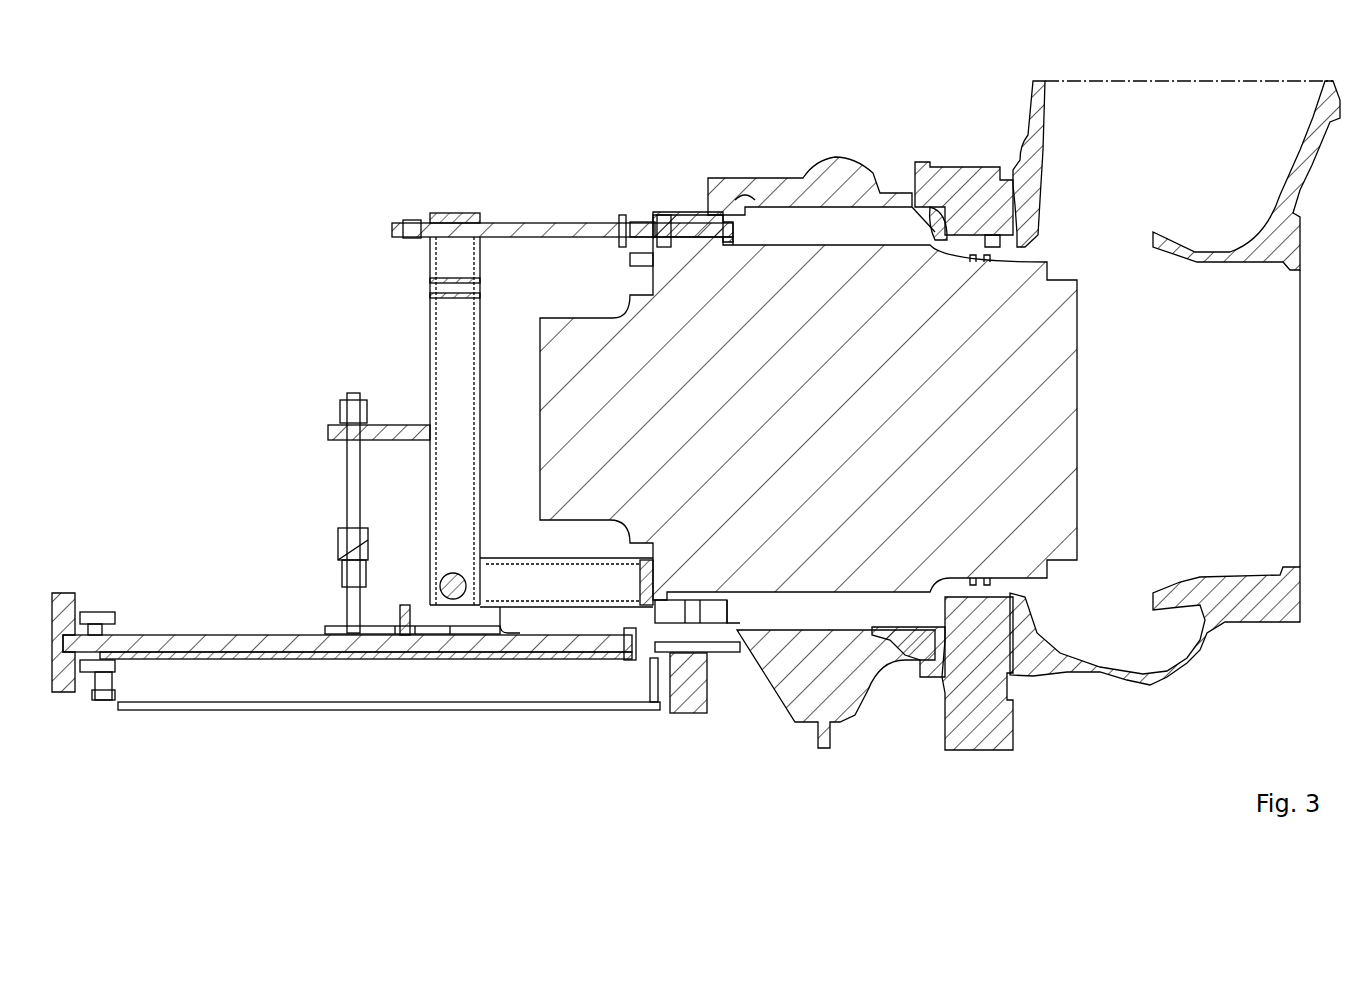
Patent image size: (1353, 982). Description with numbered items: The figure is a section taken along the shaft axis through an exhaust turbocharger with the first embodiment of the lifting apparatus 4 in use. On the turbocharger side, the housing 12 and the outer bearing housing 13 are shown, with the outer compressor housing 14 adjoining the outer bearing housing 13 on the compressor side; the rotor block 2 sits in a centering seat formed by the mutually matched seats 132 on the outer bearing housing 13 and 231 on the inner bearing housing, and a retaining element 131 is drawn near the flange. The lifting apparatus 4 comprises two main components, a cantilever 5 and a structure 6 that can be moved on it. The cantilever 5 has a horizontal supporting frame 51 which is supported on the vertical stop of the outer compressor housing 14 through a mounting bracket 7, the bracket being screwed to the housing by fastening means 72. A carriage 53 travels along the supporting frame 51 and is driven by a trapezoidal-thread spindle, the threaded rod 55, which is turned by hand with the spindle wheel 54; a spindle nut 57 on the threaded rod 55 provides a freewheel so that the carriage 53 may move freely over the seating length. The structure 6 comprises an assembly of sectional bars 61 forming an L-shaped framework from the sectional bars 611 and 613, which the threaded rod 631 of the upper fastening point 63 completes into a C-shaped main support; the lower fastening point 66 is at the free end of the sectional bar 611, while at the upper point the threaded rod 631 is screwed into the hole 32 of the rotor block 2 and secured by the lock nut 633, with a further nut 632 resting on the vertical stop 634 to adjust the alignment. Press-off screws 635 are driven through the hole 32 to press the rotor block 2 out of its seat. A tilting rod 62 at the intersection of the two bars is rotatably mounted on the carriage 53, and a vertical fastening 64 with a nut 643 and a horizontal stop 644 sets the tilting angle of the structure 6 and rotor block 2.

The rotor block 2 is at (897, 436).
The lifting apparatus 4 is at (121, 383).
The cantilever 5 is at (169, 765).
The structure 6 is at (394, 497).
The mounting bracket 7 is at (697, 700).
The housing 12 is at (1033, 138).
The outer bearing housing 13 is at (972, 178).
The outer compressor housing 14 is at (772, 183).
The hole 32 is at (692, 617).
The supporting frame 51 is at (262, 712).
The carriage 53 is at (388, 627).
The spindle wheel 54 is at (75, 598).
The threaded rod 55 is at (215, 633).
The spindle nut 57 is at (340, 659).
The assembly of sectional bars 61 is at (486, 379).
The tilting rod 62 is at (460, 580).
The fastening point 63 is at (430, 188).
The vertical fastening 64 is at (352, 517).
The fastening point 66 is at (643, 590).
The fastening means 72 is at (668, 652).
The retaining ring 131 is at (992, 243).
The seat 132 is at (918, 222).
The seat 231 is at (737, 197).
The sectional bar 611 is at (535, 612).
The sectional bar 613 is at (428, 312).
The threaded rod 631 is at (558, 232).
The nut 632 is at (412, 222).
The lock nut 633 is at (634, 222).
The vertical stop 634 is at (425, 240).
The press-off screws 635 is at (700, 232).
The nut 643 is at (345, 406).
The horizontal stop 644 is at (330, 432).